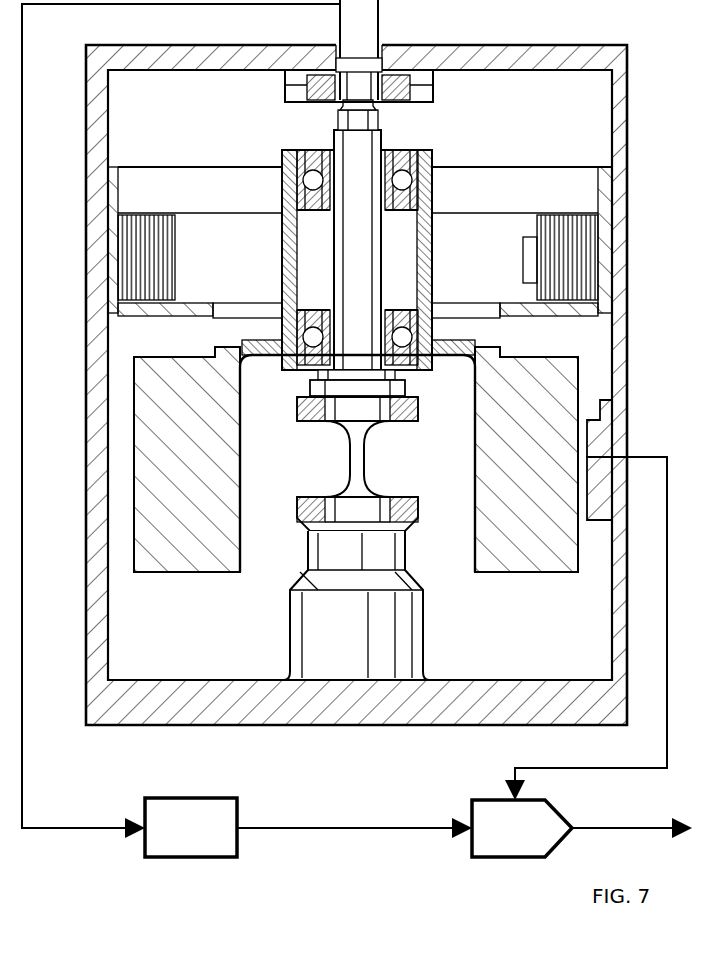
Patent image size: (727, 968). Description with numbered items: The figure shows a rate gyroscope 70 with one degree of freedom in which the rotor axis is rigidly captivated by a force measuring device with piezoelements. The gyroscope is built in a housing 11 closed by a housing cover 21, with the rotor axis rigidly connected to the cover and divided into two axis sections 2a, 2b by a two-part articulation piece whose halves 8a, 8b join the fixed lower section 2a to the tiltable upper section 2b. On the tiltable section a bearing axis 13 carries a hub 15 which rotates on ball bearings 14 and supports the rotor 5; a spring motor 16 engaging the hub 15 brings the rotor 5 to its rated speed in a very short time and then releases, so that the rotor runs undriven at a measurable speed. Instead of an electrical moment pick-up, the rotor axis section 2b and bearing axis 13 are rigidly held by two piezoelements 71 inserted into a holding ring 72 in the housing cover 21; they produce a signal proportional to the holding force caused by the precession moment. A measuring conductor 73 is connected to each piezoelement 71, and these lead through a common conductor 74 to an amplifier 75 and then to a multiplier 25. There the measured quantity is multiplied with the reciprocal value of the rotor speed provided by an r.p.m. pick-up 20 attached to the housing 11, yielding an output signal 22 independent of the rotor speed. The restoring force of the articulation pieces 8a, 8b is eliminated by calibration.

The housing 11 is at (620, 116).
The housing cover 21 is at (548, 55).
The rate gyroscope 70 is at (640, 240).
The spring motor 16 is at (135, 256).
The hub 15 is at (285, 238).
The ball bearings 14 is at (405, 180).
The bearing axis 13 is at (358, 257).
The holding ring 72 is at (398, 104).
The piezoelements 71 is at (290, 86).
The measuring conductor 73 is at (378, 28).
The rotor 5 is at (175, 455).
The tiltable section of the rotor axis 2b is at (403, 388).
The articulation piece 8a is at (360, 460).
The articulation piece 8b is at (360, 462).
The axis section of the rotor axis 2a is at (340, 652).
The r.p.m. pick-up 20 is at (588, 457).
The amplifier 75 is at (198, 795).
The common conductor 74 is at (28, 160).
The multiplier 25 is at (495, 796).
The output signal 22 is at (685, 822).